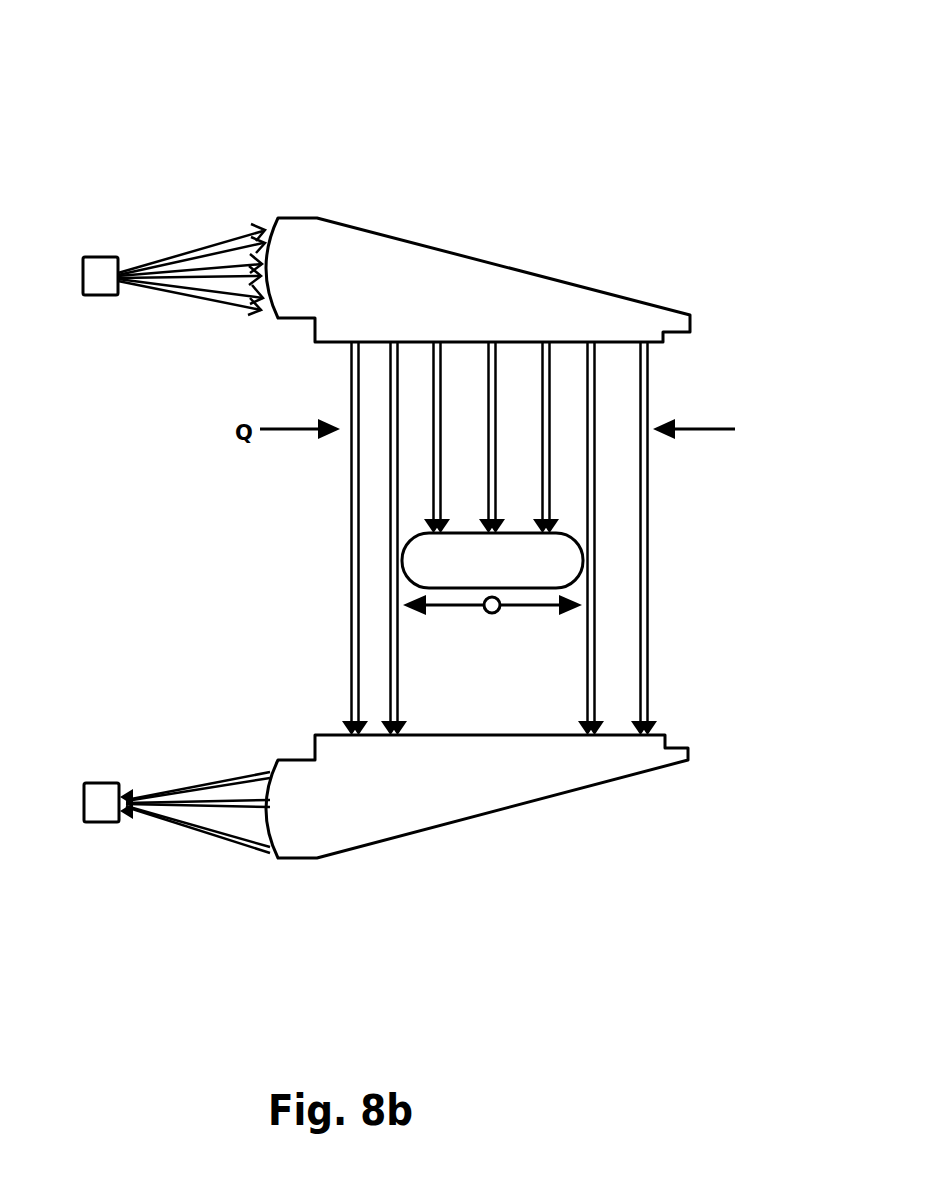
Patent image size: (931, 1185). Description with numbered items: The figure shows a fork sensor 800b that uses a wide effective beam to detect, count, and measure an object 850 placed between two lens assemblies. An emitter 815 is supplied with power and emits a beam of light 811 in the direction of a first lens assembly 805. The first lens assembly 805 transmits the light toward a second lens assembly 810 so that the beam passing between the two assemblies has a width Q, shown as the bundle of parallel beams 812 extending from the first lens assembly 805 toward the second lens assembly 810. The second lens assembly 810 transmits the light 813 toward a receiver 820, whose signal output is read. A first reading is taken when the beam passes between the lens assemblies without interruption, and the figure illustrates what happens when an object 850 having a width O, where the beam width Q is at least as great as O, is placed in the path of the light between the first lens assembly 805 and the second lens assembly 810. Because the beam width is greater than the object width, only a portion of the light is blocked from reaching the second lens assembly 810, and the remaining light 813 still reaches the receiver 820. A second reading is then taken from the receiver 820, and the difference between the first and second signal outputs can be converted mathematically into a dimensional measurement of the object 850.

The fork sensor 800b is at (186, 123).
The first lens assembly 805 is at (482, 262).
The second lens assembly 810 is at (485, 815).
The beam of light 811 is at (202, 247).
The collimated beams 812 is at (648, 396).
The light 813 is at (200, 833).
The emitter 815 is at (82, 275).
The receiver 820 is at (82, 805).
The object 850 is at (512, 572).